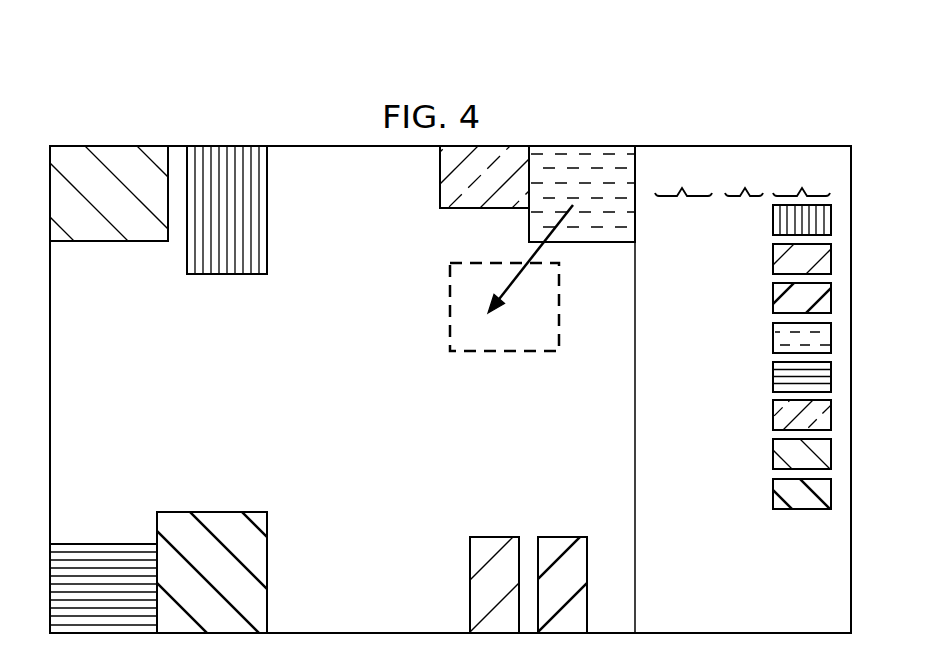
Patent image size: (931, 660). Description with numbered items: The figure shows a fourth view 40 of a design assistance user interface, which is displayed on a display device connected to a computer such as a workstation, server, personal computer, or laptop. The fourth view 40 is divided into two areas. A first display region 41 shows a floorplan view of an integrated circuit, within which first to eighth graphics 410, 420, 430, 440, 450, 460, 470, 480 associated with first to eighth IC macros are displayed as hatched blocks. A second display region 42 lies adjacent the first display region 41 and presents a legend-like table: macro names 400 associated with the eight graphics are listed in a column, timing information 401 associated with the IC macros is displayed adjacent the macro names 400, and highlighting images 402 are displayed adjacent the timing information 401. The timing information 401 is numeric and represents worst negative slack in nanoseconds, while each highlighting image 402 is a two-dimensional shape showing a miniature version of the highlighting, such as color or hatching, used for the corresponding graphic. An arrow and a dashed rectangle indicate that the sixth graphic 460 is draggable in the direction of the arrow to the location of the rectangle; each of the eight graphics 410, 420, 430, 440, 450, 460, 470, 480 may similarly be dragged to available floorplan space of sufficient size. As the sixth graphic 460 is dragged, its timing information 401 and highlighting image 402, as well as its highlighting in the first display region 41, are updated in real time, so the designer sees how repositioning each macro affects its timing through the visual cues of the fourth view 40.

The fourth view 40 is at (567, 79).
The first display region 41 is at (356, 403).
The second display region 42 is at (756, 584).
The macro names 400 is at (683, 178).
The timing information 401 is at (744, 178).
The highlighting images 402 is at (801, 178).
The first graphic 410 is at (495, 537).
The second graphic 420 is at (565, 537).
The third graphic 430 is at (103, 544).
The fourth graphic 440 is at (439, 178).
The fifth graphic 450 is at (220, 275).
The sixth graphic 460 is at (582, 243).
The seventh graphic 470 is at (108, 242).
The eighth graphic 480 is at (211, 512).